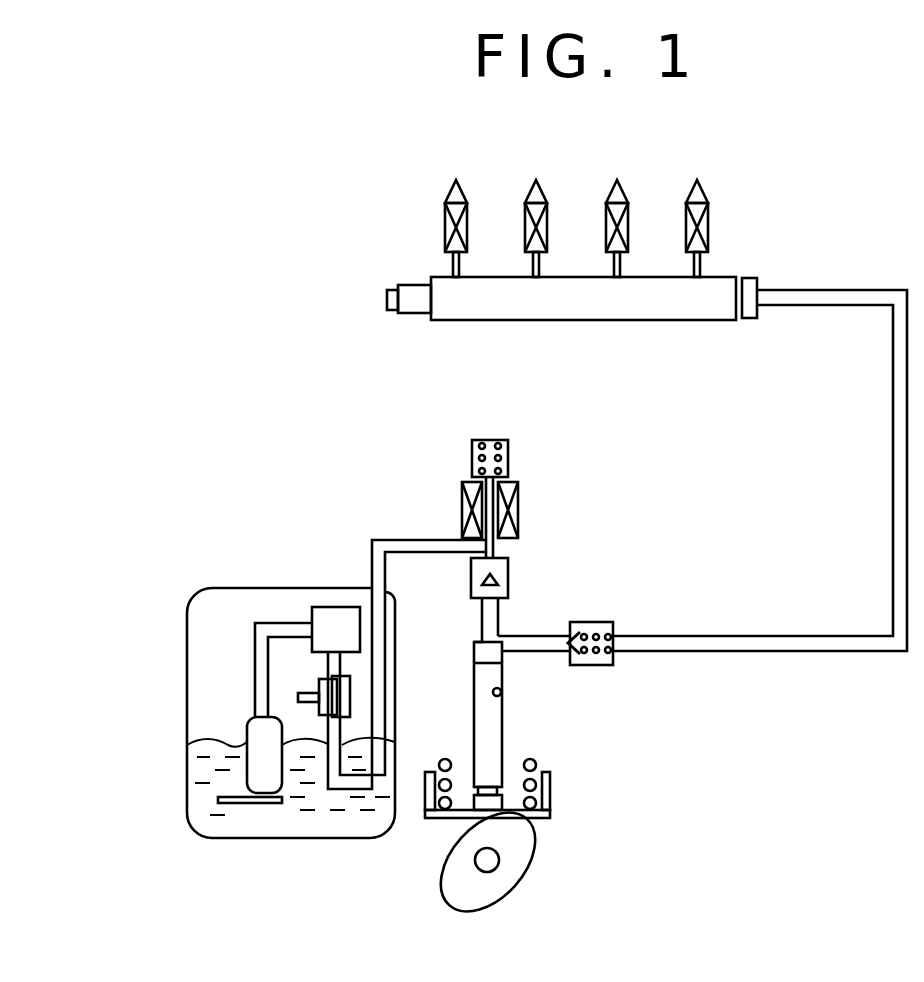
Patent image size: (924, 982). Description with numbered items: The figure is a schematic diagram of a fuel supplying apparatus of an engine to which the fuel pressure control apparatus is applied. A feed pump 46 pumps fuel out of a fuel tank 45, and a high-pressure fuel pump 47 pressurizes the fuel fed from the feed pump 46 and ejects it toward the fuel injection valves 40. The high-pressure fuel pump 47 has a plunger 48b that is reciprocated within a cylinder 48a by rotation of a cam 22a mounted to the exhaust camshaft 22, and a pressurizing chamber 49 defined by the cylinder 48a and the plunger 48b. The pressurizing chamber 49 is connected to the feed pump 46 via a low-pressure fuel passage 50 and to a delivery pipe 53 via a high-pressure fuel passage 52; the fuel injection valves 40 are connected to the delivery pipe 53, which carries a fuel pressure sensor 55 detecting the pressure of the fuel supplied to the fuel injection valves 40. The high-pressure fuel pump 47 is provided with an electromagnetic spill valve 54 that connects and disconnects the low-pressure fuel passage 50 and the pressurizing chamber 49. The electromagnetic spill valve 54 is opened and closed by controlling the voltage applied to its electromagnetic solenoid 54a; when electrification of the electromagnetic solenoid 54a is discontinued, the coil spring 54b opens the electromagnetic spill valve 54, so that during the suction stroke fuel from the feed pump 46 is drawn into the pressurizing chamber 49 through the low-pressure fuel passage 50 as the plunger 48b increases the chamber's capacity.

The fuel injection valve 40 is at (536, 181).
The delivery pipe 53 is at (507, 320).
The fuel pressure sensor 55 is at (387, 302).
The high-pressure fuel passage 52 is at (748, 651).
The electromagnetic spill valve 54 is at (488, 489).
The electromagnetic solenoid 54a is at (462, 500).
The coil spring 54b is at (507, 453).
The low-pressure fuel passage 50 is at (378, 576).
The pressurizing chamber 49 is at (480, 643).
The high-pressure fuel pump 47 is at (531, 730).
The cylinder 48a is at (501, 693).
The plunger 48b is at (490, 743).
The exhaust camshaft 22 is at (536, 862).
The cam 22a is at (535, 857).
The fuel tank 45 is at (253, 716).
The feed pump 46 is at (262, 790).